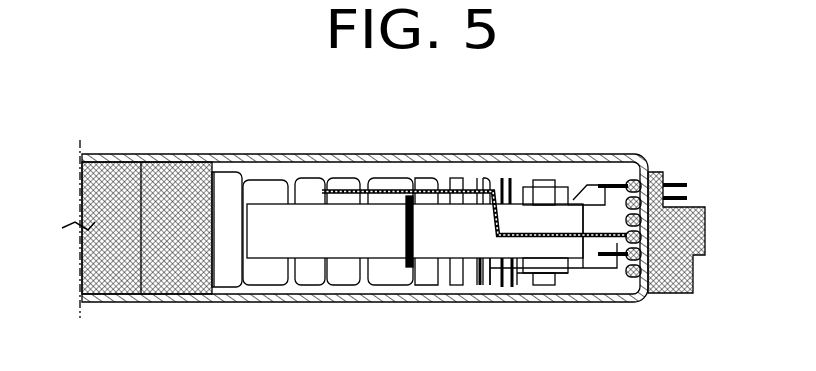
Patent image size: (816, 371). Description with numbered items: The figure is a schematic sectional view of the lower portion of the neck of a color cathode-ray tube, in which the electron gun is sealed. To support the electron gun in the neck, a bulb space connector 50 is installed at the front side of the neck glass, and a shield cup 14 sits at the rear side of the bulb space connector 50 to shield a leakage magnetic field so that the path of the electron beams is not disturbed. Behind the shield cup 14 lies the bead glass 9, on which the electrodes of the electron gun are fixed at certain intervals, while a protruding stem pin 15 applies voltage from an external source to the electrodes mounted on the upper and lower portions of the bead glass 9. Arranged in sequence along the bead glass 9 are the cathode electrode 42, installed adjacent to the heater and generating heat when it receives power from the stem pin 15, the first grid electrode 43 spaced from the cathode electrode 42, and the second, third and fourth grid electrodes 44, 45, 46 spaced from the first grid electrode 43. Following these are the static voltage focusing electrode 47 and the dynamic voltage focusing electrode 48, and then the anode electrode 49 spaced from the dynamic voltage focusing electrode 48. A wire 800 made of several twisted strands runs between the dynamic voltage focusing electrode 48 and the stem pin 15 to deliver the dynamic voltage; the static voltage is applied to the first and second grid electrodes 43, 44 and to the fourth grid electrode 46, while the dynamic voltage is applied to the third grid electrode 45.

The bulb space connector 50 is at (125, 167).
The bead glass 9 is at (272, 213).
The shield cup 14 is at (222, 280).
The anode electrode 49 is at (262, 273).
The dynamic voltage focusing electrode 48 is at (342, 183).
The wire 800 is at (369, 183).
The static voltage focusing electrode 47 is at (405, 187).
The fourth grid electrode 46 is at (458, 178).
The third grid electrode 45 is at (483, 185).
The cathode electrode 42 is at (560, 192).
The second grid electrode 44 is at (498, 288).
The first grid electrode 43 is at (513, 288).
The stem pin 15 is at (622, 262).